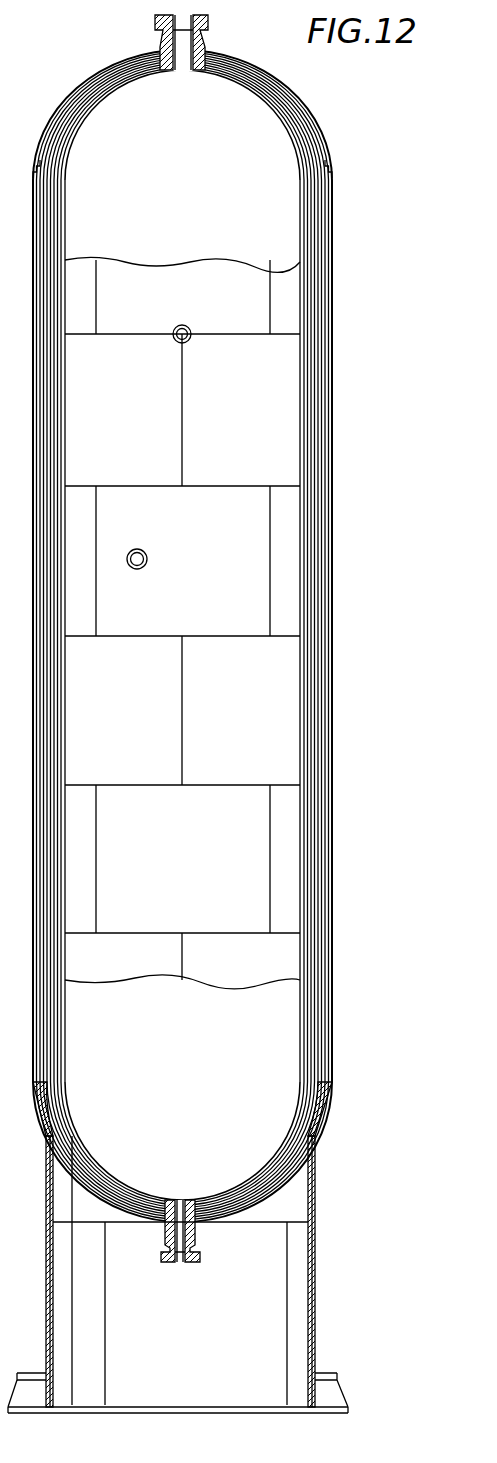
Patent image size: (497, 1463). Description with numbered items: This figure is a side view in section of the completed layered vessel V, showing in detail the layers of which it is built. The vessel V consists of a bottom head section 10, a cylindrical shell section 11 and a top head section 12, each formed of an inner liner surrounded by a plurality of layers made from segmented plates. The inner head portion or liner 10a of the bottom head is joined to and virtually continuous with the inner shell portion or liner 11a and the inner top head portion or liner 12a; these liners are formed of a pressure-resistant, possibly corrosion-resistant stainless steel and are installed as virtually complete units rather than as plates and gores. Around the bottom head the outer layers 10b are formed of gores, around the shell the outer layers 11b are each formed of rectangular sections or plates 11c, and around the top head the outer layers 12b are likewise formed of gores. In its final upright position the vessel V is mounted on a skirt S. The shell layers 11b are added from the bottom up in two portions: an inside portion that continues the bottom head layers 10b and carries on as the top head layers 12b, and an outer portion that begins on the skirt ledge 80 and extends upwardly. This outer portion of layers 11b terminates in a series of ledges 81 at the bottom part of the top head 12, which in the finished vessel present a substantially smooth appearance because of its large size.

The layered vessel V is at (92, 78).
The top head section 12 is at (302, 113).
The inner top head portion or liner 12a is at (186, 133).
The outer layers of the top head 12b is at (245, 67).
The ledges 81 is at (323, 155).
The shell section 11 is at (323, 468).
The inner shell portion or liner 11a is at (148, 1036).
The shell layers 11b is at (219, 543).
The rectangular sections or plates 11c is at (287, 398).
The bottom head section 10 is at (283, 1137).
The inner head portion or liner 10a is at (173, 1117).
The outer layers of the bottom head 10b is at (272, 1180).
The skirt ledge 80 is at (318, 1077).
The skirt S is at (313, 1287).